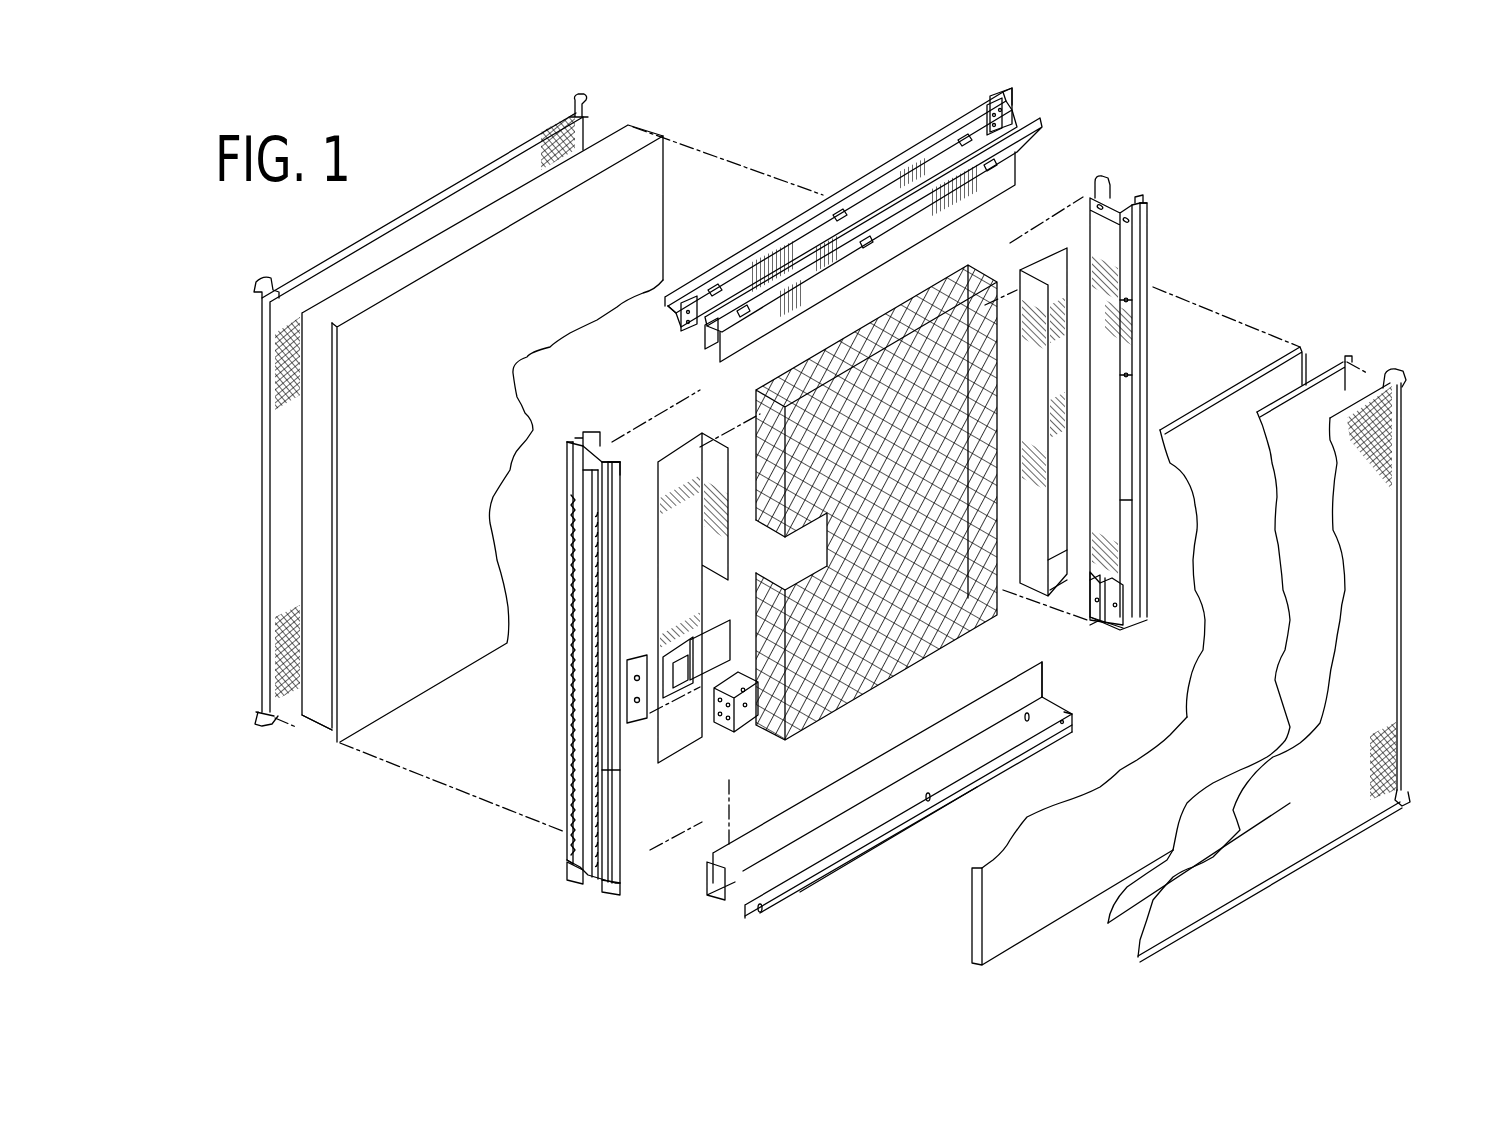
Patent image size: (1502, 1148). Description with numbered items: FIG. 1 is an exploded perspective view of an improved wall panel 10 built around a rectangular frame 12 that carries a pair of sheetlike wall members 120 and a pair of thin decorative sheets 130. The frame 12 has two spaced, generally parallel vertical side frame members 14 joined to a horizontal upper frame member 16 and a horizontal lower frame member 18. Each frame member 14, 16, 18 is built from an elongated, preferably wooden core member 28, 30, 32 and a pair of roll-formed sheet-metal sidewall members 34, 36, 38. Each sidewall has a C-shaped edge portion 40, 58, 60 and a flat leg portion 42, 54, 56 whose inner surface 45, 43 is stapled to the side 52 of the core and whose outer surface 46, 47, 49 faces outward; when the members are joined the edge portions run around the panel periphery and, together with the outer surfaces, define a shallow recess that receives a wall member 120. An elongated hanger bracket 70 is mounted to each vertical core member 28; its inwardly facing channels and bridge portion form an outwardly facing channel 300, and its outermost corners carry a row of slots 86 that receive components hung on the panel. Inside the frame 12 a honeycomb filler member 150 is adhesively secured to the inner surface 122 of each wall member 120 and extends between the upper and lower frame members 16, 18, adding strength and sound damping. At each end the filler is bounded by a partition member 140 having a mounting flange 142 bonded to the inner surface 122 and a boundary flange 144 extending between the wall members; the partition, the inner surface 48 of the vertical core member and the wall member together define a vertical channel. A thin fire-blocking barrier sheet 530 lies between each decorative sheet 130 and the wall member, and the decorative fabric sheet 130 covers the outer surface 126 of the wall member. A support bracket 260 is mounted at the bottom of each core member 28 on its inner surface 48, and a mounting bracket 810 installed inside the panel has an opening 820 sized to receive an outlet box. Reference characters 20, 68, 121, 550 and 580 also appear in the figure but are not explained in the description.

The wall panel 10 is at (1180, 155).
The rectangular frame 12 is at (620, 920).
The vertical side frame member 14 is at (1150, 250).
The upper frame member 16 is at (885, 140).
The lower frame member 18 is at (795, 900).
The upright channel 20 is at (605, 477).
The core member 28 is at (1125, 355).
The core member 30 is at (862, 270).
The core member 32 is at (882, 782).
The sidewall member 34 is at (568, 522).
The sidewall member 36 is at (860, 205).
The sidewall member 38 is at (1020, 690).
The edge portion 40 is at (566, 462).
The sidewall leg portion 42 is at (1148, 445).
The inner surface 43 is at (838, 792).
The inner surface 45 is at (768, 255).
The outer surface 46 is at (1130, 497).
The outer surface 47 is at (940, 205).
The inner surface of vertical core member 48 is at (1125, 328).
The outer surface 49 is at (845, 833).
The side of core member 52 is at (845, 270).
The sidewall leg portion 54 is at (765, 322).
The sidewall leg portion 56 is at (925, 785).
The edge portion 58 is at (735, 250).
The edge portion 60 is at (980, 790).
The hook 68 is at (605, 434).
The hanger bracket 70 is at (566, 700).
The slots 86 is at (608, 665).
The sheetlike wall member 120 is at (652, 168).
The clip 121 is at (1015, 112).
The inner surface of wall member 122 is at (400, 683).
The outer surface of wall member 126 is at (332, 725).
The thin decorative sheet 130 is at (290, 551).
The partition member 140 is at (690, 720).
The mounting flange 142 is at (682, 455).
The boundary flange 144 is at (738, 725).
The filler member 150 is at (910, 640).
The support bracket 260 is at (1110, 623).
The outwardly facing channel 300 is at (592, 612).
The barrier sheet 530 is at (612, 145).
The post foot 550 is at (620, 852).
The rail clip 580 is at (990, 105).
The mounting bracket 810 is at (640, 730).
The opening 820 is at (734, 670).